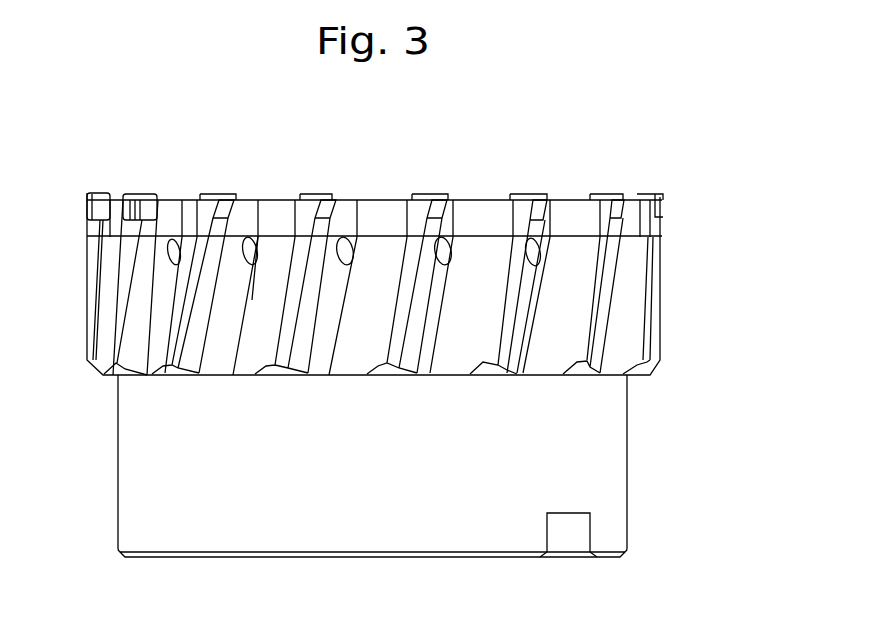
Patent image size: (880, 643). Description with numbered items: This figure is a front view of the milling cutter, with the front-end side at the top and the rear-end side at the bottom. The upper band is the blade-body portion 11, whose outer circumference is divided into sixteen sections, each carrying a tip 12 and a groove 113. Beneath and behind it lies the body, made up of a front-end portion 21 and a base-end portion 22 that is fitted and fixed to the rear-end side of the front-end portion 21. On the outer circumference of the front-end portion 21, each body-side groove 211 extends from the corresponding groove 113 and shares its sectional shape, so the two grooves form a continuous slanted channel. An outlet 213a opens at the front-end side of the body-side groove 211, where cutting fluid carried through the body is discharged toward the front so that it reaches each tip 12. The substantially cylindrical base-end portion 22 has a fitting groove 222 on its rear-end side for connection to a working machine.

The blade-body portion 11 is at (470, 200).
The tip 12 is at (322, 213).
The groove 113 is at (243, 215).
The outlet 213a is at (177, 243).
The front-end portion 21 is at (662, 303).
The body-side groove 211 is at (157, 323).
The base-end portion 22 is at (432, 494).
The fitting groove 222 is at (571, 515).